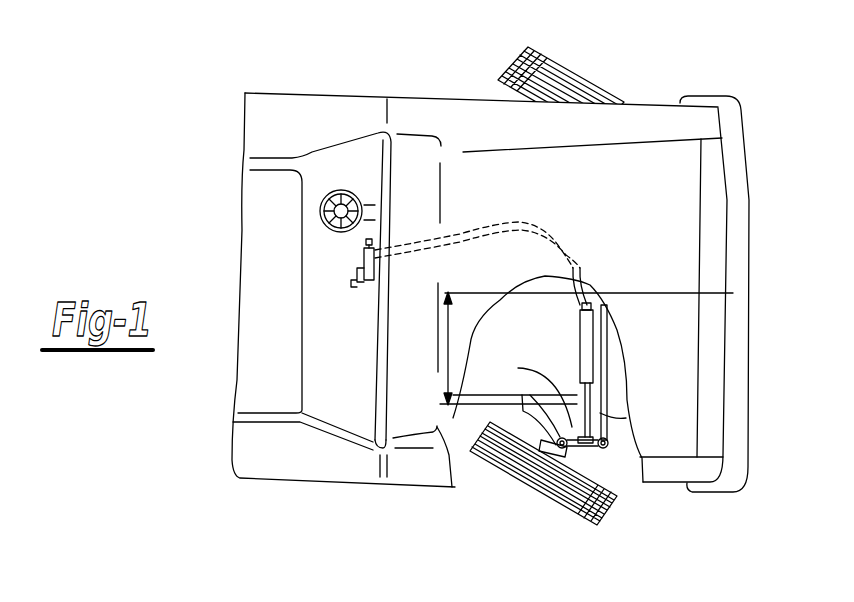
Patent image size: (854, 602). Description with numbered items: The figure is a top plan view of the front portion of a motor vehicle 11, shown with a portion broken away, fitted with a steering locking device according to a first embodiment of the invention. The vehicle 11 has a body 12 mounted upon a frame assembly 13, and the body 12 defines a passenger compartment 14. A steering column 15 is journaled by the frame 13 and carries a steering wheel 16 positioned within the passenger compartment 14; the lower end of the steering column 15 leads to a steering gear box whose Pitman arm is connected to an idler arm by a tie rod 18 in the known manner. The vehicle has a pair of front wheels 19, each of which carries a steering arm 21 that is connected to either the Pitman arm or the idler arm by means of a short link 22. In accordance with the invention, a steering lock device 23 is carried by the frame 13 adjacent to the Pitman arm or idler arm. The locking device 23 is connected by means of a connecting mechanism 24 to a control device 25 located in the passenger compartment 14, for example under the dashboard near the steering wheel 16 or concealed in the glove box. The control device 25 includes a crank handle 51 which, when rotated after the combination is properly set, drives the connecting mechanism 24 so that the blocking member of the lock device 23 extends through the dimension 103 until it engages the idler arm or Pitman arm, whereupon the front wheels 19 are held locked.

The motor vehicle 11 is at (672, 80).
The body 12 is at (408, 93).
The frame assembly 13 is at (612, 398).
The passenger compartment 14 is at (250, 336).
The steering column 15 is at (338, 208).
The steering wheel 16 is at (322, 225).
The tie rod 18 is at (594, 297).
The front wheels 19 is at (560, 70).
The steering arm 21 is at (595, 460).
The short link 22 is at (572, 360).
The steering lock device 23 is at (582, 323).
The connecting mechanism 24 is at (512, 217).
The control device 25 is at (380, 246).
The crank handle 51 is at (353, 287).
The dimension 103 is at (437, 381).